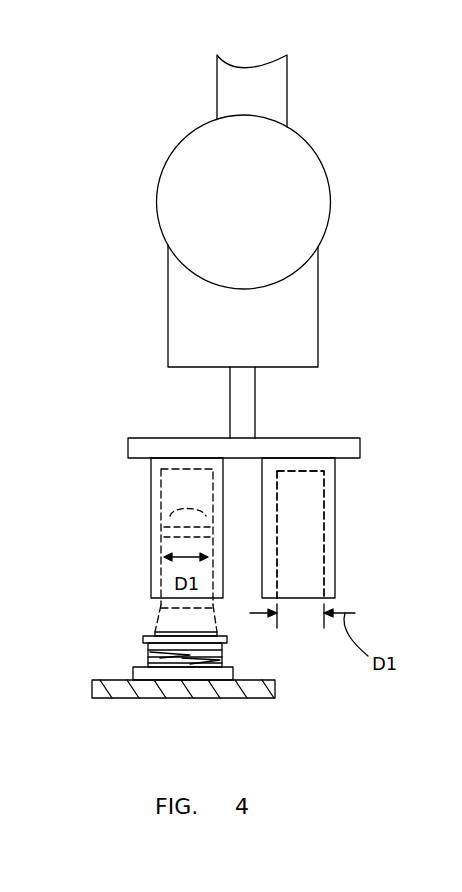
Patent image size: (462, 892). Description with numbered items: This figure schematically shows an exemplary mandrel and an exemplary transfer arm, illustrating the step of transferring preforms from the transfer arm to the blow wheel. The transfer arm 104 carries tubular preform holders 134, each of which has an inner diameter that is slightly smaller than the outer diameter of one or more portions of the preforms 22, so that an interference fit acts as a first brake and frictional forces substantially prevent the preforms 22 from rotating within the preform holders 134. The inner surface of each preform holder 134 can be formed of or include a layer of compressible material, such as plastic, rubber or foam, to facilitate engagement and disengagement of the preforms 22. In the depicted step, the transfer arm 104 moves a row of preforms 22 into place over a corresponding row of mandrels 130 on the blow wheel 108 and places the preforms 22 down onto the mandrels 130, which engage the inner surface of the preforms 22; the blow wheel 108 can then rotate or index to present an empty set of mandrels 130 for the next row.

The transfer arm 104 is at (323, 452).
The preform holder 134 is at (337, 530).
The preform 22 is at (172, 621).
The mandrel 130 is at (227, 673).
The blow wheel 108 is at (228, 690).